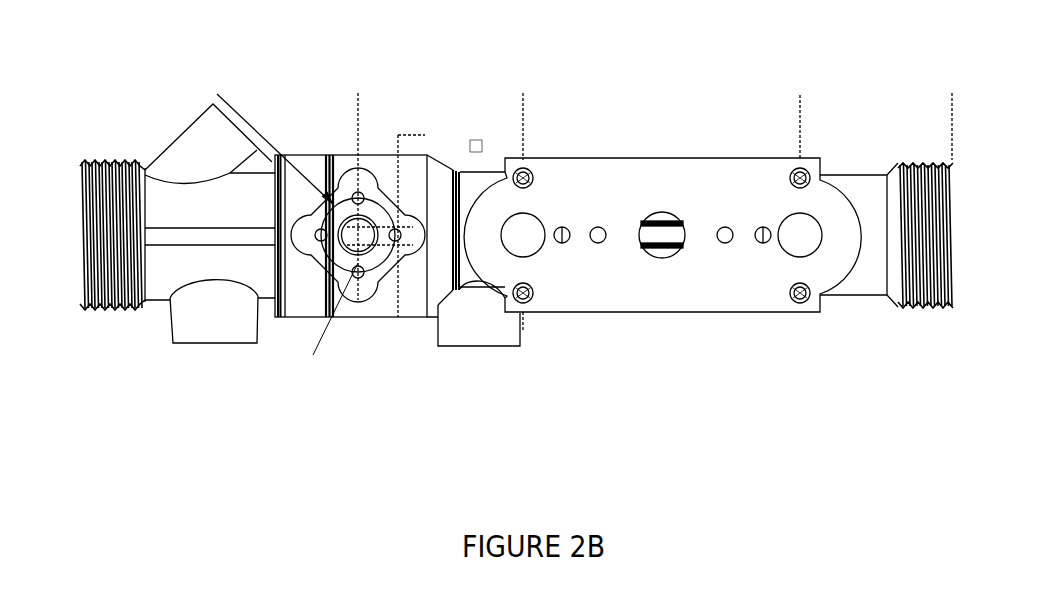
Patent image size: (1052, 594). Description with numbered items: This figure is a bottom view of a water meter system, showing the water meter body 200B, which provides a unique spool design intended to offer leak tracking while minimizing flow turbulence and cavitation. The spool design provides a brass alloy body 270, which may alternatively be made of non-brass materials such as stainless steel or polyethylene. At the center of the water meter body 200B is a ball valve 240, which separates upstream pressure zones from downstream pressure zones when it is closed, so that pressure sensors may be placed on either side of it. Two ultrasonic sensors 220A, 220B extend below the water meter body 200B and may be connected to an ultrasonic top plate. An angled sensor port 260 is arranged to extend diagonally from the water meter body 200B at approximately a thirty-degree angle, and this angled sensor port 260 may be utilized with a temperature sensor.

The water meter body 200B is at (505, 226).
The angled sensor port 260 is at (246, 102).
The ball valve 240 is at (394, 158).
The brass alloy body 270 is at (855, 160).
The ultrasonic sensor 220A is at (483, 368).
The ultrasonic sensor 220B is at (213, 369).